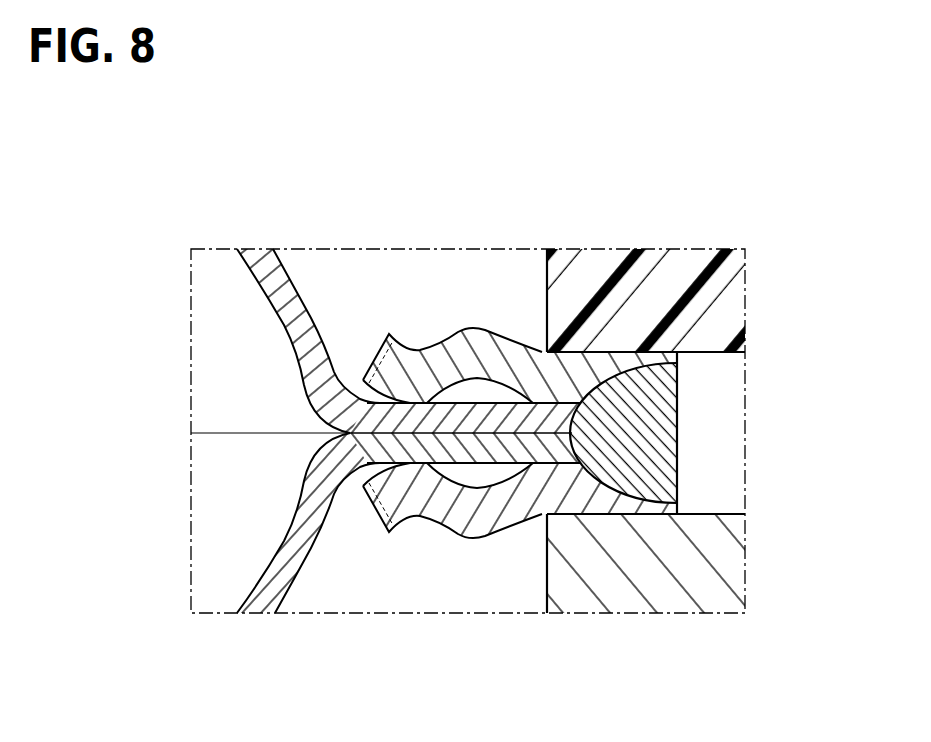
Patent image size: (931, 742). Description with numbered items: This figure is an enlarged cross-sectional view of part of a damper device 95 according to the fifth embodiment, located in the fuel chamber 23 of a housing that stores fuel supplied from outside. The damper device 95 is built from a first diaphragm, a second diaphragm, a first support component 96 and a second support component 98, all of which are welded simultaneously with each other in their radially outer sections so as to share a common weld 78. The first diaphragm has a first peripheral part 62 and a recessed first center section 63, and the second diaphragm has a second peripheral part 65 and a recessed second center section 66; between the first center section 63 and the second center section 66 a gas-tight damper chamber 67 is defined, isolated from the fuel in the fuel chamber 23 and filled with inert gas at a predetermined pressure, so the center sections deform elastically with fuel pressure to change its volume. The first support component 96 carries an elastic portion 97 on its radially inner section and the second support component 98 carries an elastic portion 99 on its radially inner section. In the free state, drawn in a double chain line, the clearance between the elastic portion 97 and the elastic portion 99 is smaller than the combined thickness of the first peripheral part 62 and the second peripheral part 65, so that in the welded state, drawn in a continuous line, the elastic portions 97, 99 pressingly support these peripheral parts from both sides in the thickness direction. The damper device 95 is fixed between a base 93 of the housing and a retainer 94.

The fuel chamber 23 is at (354, 292).
The first peripheral part 62 is at (480, 450).
The first center section 63 is at (289, 560).
The second peripheral part 65 is at (480, 418).
The second center section 66 is at (282, 290).
The damper chamber 67 is at (228, 333).
The weld 78 is at (653, 436).
The base 93 is at (660, 580).
The retainer 94 is at (660, 293).
The damper device 95 is at (688, 393).
The first support component 96 is at (563, 490).
The elastic portion 97 is at (417, 490).
The second support component 98 is at (562, 382).
The elastic portion 99 is at (416, 380).